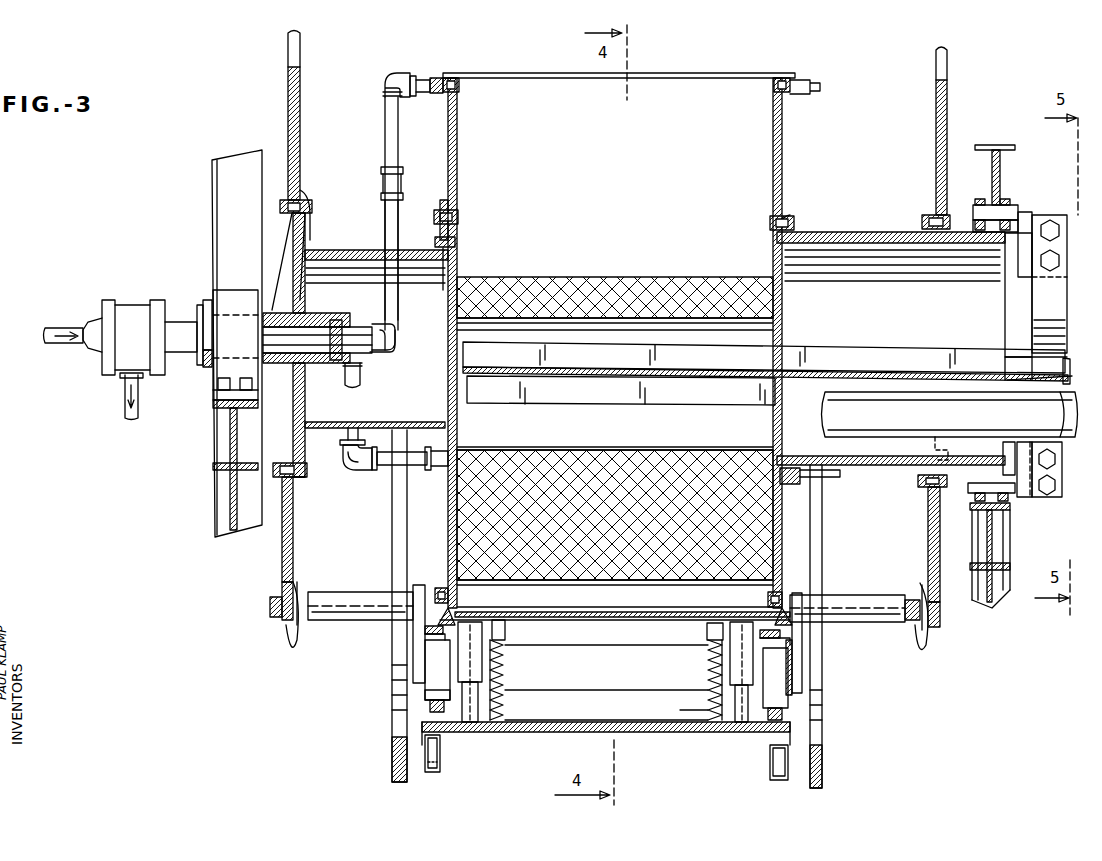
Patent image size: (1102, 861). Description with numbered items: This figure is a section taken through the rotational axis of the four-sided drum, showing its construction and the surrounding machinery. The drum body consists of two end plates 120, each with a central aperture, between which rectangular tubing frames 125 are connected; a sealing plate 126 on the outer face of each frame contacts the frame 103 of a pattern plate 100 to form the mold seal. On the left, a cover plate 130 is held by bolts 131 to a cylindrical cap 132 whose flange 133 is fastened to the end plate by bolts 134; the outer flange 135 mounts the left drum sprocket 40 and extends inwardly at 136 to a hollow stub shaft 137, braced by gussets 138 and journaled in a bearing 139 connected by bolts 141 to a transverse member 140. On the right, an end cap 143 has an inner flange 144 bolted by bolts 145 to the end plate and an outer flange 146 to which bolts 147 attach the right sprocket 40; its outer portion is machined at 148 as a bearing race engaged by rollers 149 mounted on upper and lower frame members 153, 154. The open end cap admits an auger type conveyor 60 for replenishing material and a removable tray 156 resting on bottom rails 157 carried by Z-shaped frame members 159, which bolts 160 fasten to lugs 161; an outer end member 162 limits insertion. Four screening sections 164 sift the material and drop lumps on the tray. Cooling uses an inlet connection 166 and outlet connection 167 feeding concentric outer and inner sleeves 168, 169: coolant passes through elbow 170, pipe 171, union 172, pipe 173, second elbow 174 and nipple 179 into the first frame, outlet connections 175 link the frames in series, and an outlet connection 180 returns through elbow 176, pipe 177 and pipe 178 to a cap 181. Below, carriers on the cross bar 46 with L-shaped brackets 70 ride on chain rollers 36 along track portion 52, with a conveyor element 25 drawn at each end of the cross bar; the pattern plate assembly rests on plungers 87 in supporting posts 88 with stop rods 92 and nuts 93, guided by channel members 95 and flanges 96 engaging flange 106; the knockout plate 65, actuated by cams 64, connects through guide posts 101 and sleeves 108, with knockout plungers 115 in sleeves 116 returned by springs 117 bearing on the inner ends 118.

The flywheel hub 25 is at (270, 606).
The flanged rollers 36 is at (293, 635).
The drum sprocket 40 is at (288, 115).
The cross bar 46 is at (875, 610).
The supporting track portion 52 is at (392, 756).
The auger type conveyor 60 is at (826, 428).
The wedge shaped cams 64 is at (440, 768).
The knockout plate 65 is at (682, 735).
The L-shaped brackets 70 is at (802, 690).
The plunger 87 is at (425, 648).
The supporting post 88 is at (435, 660).
The stop rod 92 is at (430, 695).
The nut 93 is at (430, 707).
The channel member 95 is at (790, 670).
The upper flange 96 is at (788, 655).
The pattern plate 100 is at (660, 620).
The guide posts 101 is at (705, 710).
The frame 103 is at (752, 612).
The carrier engaging flange 106 is at (790, 640).
The elongated sleeve 108 is at (503, 660).
The knockout plungers 115 is at (505, 695).
The sleeve 116 is at (505, 632).
The springs 117 is at (505, 712).
The inner end of sleeve 118 is at (712, 640).
The end plates 120 is at (458, 185).
The rectangular tubing frame 125 is at (460, 90).
The sealing plate 126 is at (505, 602).
The cover plate 130 is at (458, 258).
The bolts 131 is at (458, 240).
The cylindrical cap 132 is at (330, 250).
The flange 133 is at (445, 208).
The bolts 134 is at (460, 214).
The outer flange 135 is at (305, 232).
The inward extension 136 is at (307, 286).
The hollow stub shaft 137 is at (308, 322).
The gussets 138 is at (305, 403).
The bearing 139 is at (205, 370).
The transverse member 140 is at (230, 445).
The bolts 141 is at (222, 404).
The end cap 143 is at (848, 240).
The inner flange 144 is at (790, 218).
The bolts 145 is at (770, 223).
The outer flange 146 is at (934, 215).
The bolts 147 is at (918, 482).
The bearing race 148 is at (1000, 248).
The rollers 149 is at (956, 448).
The upper horizontal frame member 153 is at (1002, 175).
The lower horizontal frame member 154 is at (1010, 558).
The removable tray 156 is at (832, 370).
The angle iron bottom rails 157 is at (648, 395).
The Z-shaped frame members 159 is at (1015, 305).
The bolts 160 is at (1048, 222).
The lugs 161 is at (1020, 210).
The outer end member 162 is at (1010, 375).
The screening sections 164 is at (585, 570).
The inlet connection 166 is at (65, 330).
The outlet connection 167 is at (125, 405).
The outer sleeve 168 is at (372, 327).
The inner sleeve 169 is at (338, 363).
The elbow 170 is at (395, 334).
The pipe 171 is at (392, 298).
The union 172 is at (382, 182).
The pipe 173 is at (386, 130).
The second elbow 174 is at (385, 88).
The outlet connection 175 is at (815, 88).
The elbow 176 is at (352, 466).
The pipe 177 is at (340, 432).
The pipe 178 is at (362, 375).
The nipple 179 is at (416, 96).
The outlet connection 180 is at (392, 462).
The cap 181 is at (375, 353).